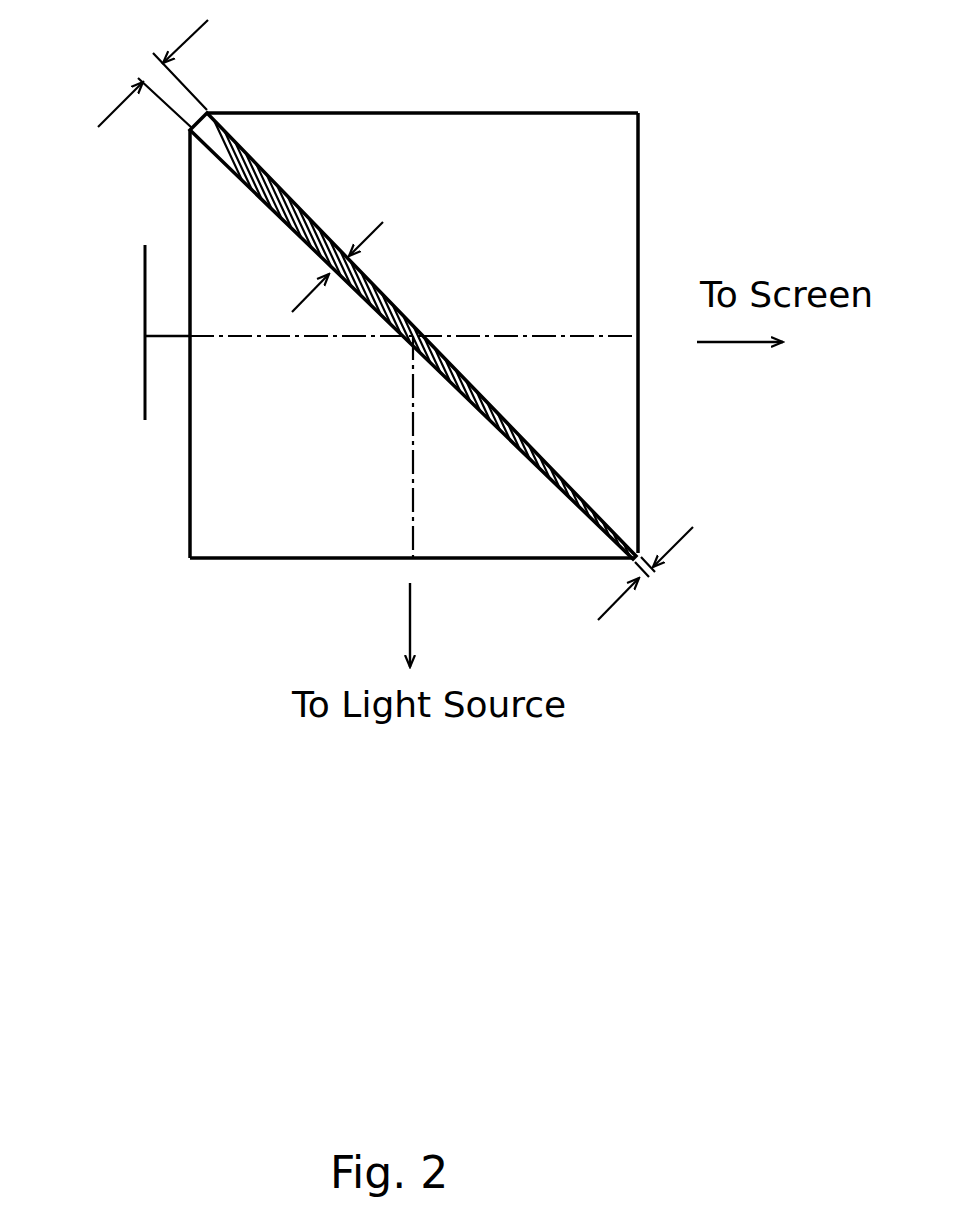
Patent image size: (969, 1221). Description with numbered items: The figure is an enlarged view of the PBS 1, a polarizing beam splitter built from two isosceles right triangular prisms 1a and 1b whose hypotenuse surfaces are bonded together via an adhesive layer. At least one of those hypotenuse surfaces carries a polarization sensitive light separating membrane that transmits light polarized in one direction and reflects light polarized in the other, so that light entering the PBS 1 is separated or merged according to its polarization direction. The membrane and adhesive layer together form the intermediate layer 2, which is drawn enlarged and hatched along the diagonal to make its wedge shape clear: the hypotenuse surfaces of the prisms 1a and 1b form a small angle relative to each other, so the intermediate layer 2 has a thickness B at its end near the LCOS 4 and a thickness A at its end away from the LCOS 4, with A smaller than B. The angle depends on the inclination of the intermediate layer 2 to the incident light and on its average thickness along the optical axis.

The PBS 1 is at (428, 128).
The isosceles right triangular prism 1a is at (206, 513).
The isosceles right triangular prism 1b is at (610, 259).
The intermediate layer 2 is at (545, 463).
The LCOS 4 is at (144, 411).
The thickness A is at (645, 558).
The thickness B is at (137, 74).